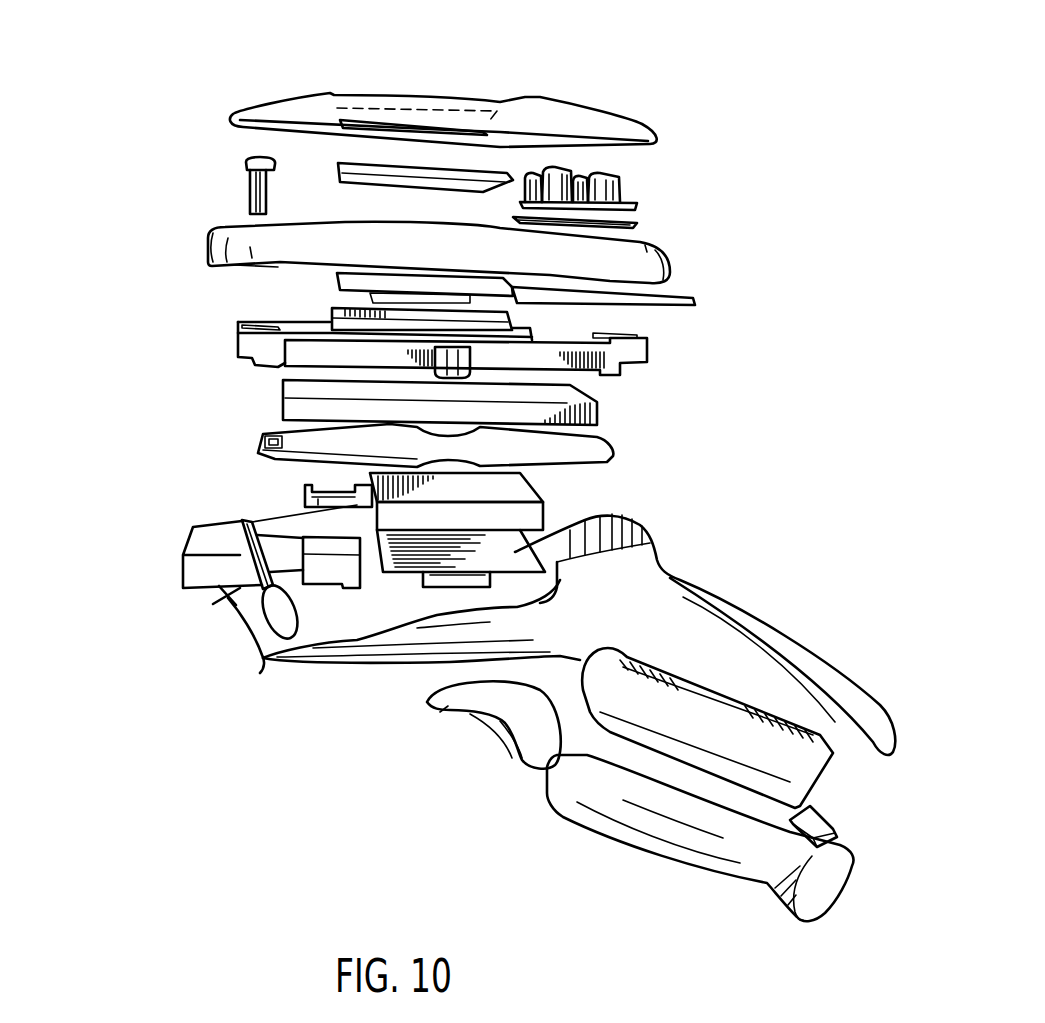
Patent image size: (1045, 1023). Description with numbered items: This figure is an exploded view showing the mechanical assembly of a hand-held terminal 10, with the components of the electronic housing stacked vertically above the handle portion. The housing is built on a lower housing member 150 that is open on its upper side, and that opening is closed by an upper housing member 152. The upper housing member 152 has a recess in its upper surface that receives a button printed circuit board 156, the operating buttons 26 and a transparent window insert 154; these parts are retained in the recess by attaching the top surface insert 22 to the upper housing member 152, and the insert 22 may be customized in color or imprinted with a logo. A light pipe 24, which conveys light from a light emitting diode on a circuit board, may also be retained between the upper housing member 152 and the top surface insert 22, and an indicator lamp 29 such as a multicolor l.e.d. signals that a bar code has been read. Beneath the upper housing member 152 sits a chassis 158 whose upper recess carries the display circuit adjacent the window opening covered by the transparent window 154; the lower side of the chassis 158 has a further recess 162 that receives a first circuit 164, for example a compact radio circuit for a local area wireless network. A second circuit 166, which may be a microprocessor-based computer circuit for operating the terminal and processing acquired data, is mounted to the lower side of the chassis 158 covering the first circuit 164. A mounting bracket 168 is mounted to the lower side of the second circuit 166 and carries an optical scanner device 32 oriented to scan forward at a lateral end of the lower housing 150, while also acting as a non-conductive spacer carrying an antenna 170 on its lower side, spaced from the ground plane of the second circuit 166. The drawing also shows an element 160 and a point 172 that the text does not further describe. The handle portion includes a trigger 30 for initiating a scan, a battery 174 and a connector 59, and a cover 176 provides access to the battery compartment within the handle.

The hand-held terminal 10 is at (720, 64).
The top surface insert 22 is at (578, 114).
The transparent window insert 154 is at (408, 172).
The indicator lamp 29 is at (246, 161).
The operating buttons 26 is at (620, 182).
The button printed circuit board 156 is at (640, 222).
The upper housing member 152 is at (667, 267).
The light pipe 24 is at (500, 290).
The scan module 160 is at (333, 322).
The recess 162 is at (313, 353).
The chassis 158 is at (640, 357).
The first circuit 164 is at (600, 412).
The second circuit 166 is at (262, 442).
The mounting bracket 168 is at (520, 503).
The antenna 170 is at (610, 515).
The optical scanner device 32 is at (327, 547).
The pivot point 172 is at (222, 594).
The lower housing member 150 is at (262, 665).
The trigger 30 is at (427, 702).
The battery 174 is at (732, 745).
The cover 176 is at (547, 797).
The connector 59 is at (817, 823).